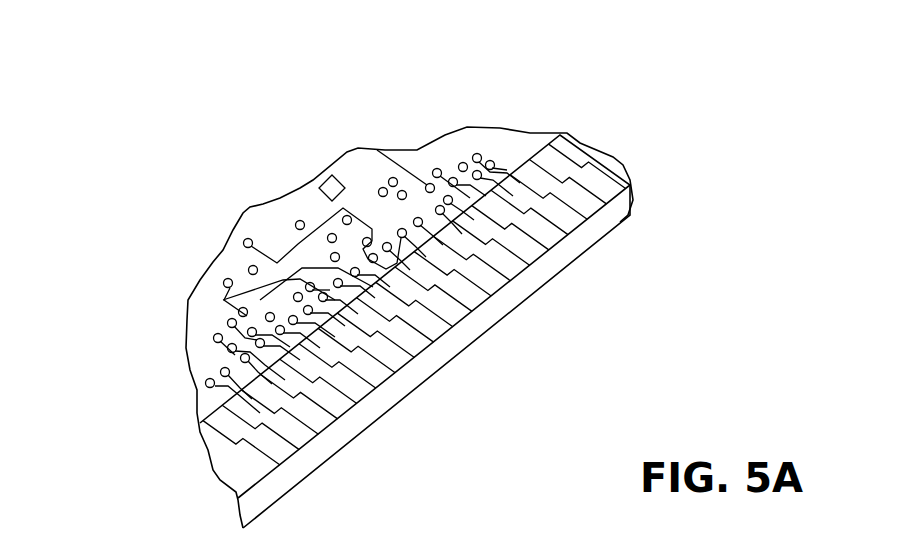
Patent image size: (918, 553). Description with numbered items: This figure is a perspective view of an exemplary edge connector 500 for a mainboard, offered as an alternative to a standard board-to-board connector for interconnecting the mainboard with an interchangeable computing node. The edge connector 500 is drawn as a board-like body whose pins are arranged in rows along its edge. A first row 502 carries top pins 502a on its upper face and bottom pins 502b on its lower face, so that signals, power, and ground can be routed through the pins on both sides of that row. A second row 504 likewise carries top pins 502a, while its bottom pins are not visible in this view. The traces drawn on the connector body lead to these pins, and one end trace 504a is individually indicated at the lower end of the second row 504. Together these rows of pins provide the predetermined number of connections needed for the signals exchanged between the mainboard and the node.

The edge connector 500 is at (150, 280).
The first row 502 is at (588, 210).
The top pins 502a is at (589, 192).
The bottom pins 502b is at (570, 242).
The second row 504 is at (258, 427).
The end trace 504a is at (236, 458).